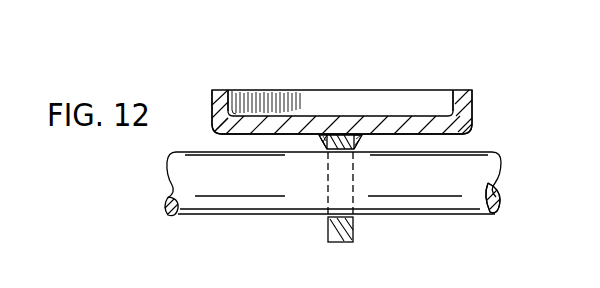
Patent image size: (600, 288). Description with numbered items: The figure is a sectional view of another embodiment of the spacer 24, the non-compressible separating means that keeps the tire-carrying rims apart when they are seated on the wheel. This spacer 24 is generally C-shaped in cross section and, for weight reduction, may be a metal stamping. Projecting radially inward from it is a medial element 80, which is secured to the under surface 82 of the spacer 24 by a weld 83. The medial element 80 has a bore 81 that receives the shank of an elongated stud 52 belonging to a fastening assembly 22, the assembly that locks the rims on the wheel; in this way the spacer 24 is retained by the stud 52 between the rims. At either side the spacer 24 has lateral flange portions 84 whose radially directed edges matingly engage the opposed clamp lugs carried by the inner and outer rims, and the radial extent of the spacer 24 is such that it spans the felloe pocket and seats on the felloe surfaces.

The fastening assembly 22 is at (508, 152).
The spacer 24 is at (387, 61).
The elongated stud 52 is at (486, 178).
The medial element 80 is at (343, 242).
The bore 81 is at (353, 212).
The under surface 82 is at (290, 135).
The weld 83 is at (358, 142).
The lateral flange portions 84 is at (213, 92).